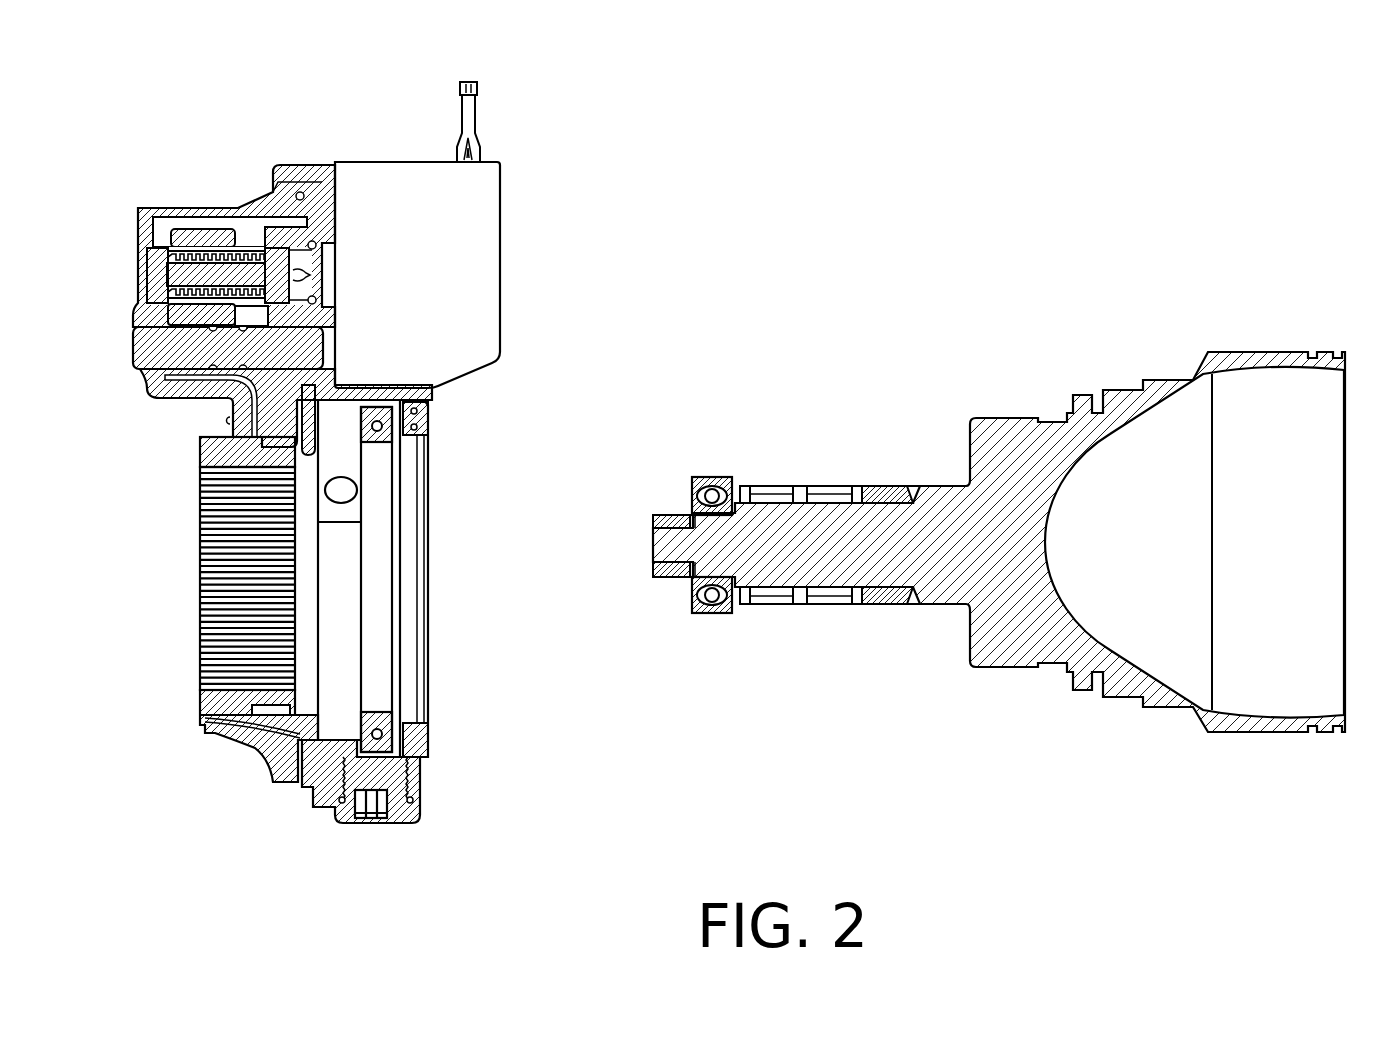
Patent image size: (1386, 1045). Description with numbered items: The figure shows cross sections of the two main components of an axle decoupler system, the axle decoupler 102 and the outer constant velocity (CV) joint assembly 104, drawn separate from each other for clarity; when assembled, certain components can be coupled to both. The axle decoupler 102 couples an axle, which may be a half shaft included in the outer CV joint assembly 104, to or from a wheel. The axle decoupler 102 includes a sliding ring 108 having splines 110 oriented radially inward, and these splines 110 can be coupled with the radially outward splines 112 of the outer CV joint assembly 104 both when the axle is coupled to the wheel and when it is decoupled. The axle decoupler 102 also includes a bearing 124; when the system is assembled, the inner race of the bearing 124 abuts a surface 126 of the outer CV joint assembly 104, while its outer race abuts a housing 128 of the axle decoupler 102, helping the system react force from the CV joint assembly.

The axle decoupler 102 is at (519, 87).
The outer constant velocity (CV) joint assembly 104 is at (712, 378).
The sliding ring 108 is at (212, 453).
The splines 110 is at (229, 490).
The splines 112 is at (998, 415).
The bearing 124 is at (375, 470).
The surface 126 is at (1117, 385).
The housing 128 is at (394, 396).